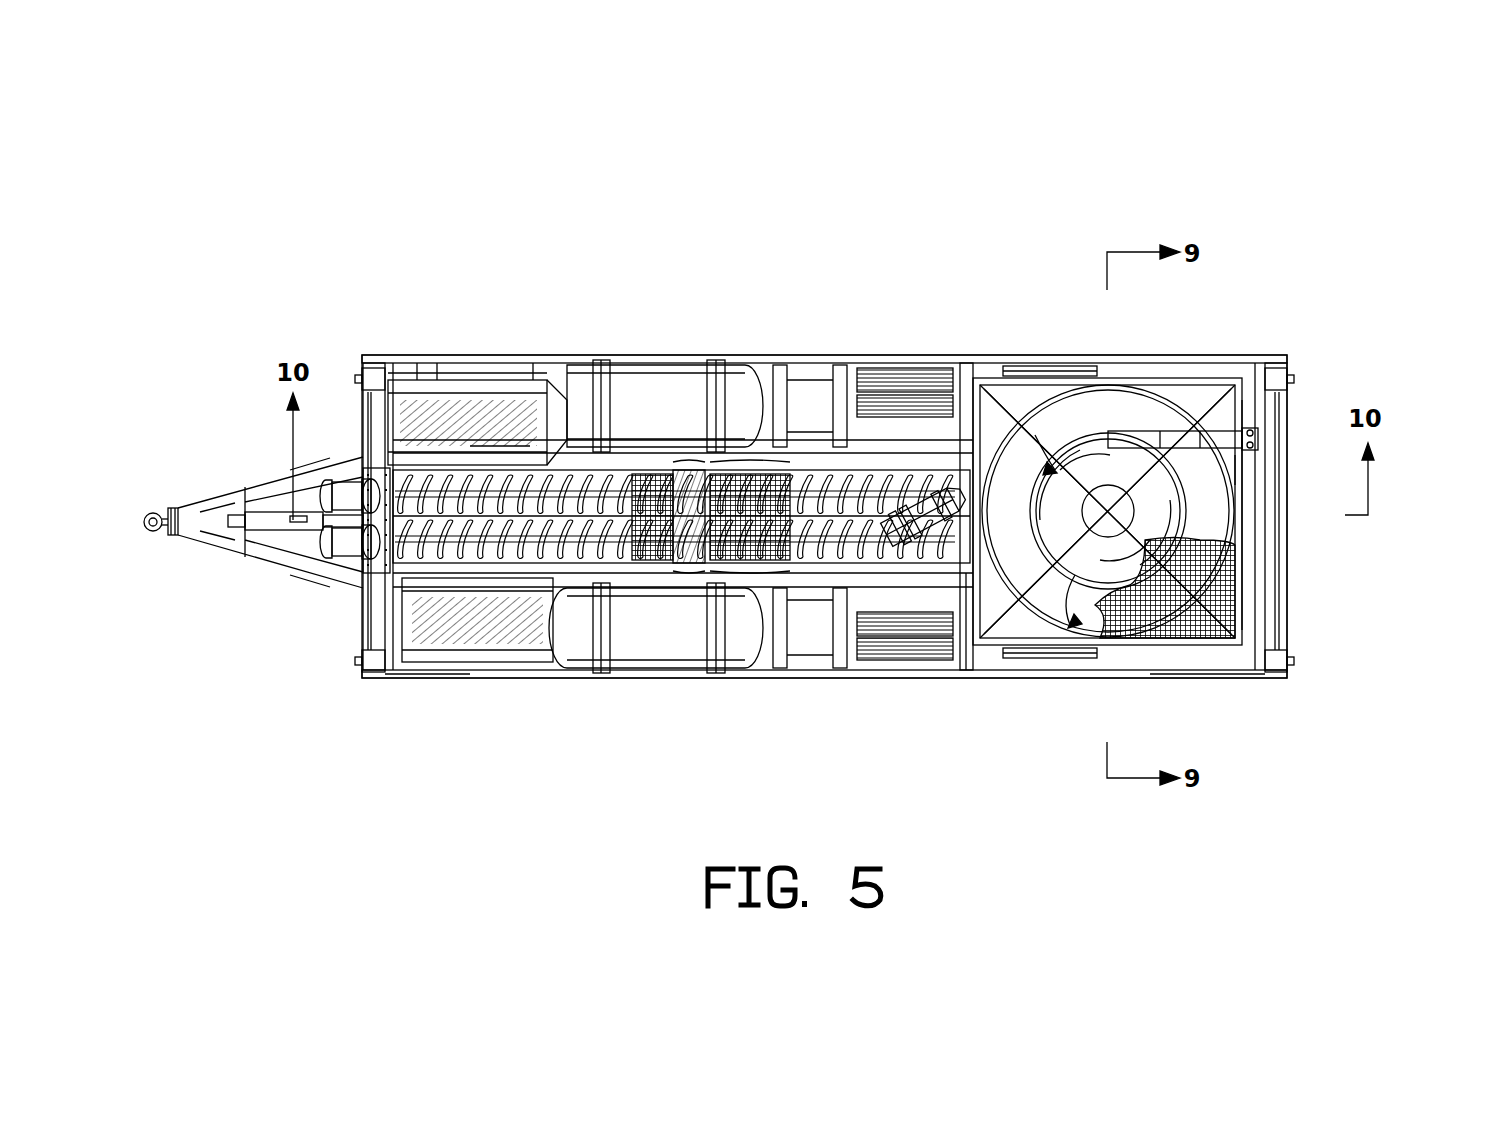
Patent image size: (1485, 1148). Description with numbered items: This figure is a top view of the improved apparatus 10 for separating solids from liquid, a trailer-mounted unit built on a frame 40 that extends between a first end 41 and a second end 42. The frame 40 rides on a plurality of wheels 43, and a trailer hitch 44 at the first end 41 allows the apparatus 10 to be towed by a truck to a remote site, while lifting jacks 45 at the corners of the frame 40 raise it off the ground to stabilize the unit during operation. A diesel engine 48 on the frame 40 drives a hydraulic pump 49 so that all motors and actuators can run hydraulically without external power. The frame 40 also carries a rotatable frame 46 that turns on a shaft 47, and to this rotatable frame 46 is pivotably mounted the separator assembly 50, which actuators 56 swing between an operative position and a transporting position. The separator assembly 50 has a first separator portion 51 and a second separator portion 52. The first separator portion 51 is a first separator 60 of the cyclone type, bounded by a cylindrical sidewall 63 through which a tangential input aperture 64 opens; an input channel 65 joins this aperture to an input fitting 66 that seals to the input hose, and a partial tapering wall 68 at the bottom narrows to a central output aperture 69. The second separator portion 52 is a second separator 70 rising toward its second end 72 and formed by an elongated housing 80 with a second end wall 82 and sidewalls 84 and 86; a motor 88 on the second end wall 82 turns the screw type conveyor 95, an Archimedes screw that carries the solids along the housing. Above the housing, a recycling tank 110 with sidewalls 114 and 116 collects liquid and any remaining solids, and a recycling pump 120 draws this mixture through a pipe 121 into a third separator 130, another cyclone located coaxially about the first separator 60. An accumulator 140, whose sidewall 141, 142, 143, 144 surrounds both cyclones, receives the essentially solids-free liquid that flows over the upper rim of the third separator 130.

The apparatus for separating solids from liquid 10 is at (890, 173).
The frame 40 is at (762, 678).
The first end 41 is at (418, 681).
The second end 42 is at (1222, 680).
The wheels 43 is at (935, 650).
The trailer hitch 44 is at (150, 513).
The lifting jacks 45 is at (358, 661).
The rotatable frame 46 is at (818, 640).
The shaft 47 is at (1023, 645).
The diesel engine 48 is at (413, 405).
The hydraulic pump 49 is at (492, 625).
The separator assembly 50 is at (1188, 352).
The first separator portion 51 is at (1060, 513).
The second separator portion 52 is at (541, 420).
The actuators 56 is at (843, 470).
The first separator 60 is at (1242, 520).
The cylindrical sidewall 63 is at (1058, 600).
The input aperture 64 is at (1125, 442).
The input channel 65 is at (1207, 437).
The input fitting 66 is at (1258, 432).
The tapering wall 68 is at (960, 485).
The central output aperture 69 is at (1103, 507).
The second separator 70 is at (750, 455).
The second end 72 is at (523, 600).
The elongated housing 80 is at (498, 440).
The second end wall 82 is at (338, 373).
The sidewall 84 is at (668, 565).
The sidewall 86 is at (632, 470).
The motor 88 is at (325, 495).
The screw type conveyor 95 is at (475, 485).
The recycling tank 110 is at (784, 455).
The sidewall 114 is at (810, 600).
The sidewall 116 is at (792, 470).
The recycling pump 120 is at (898, 585).
The pipe 121 is at (894, 480).
The third separator 130 is at (1225, 573).
The accumulator 140 is at (1246, 378).
The sidewall 141 is at (1180, 650).
The sidewall 142 is at (958, 650).
The sidewall 143 is at (1104, 378).
The sidewall 144 is at (1243, 470).